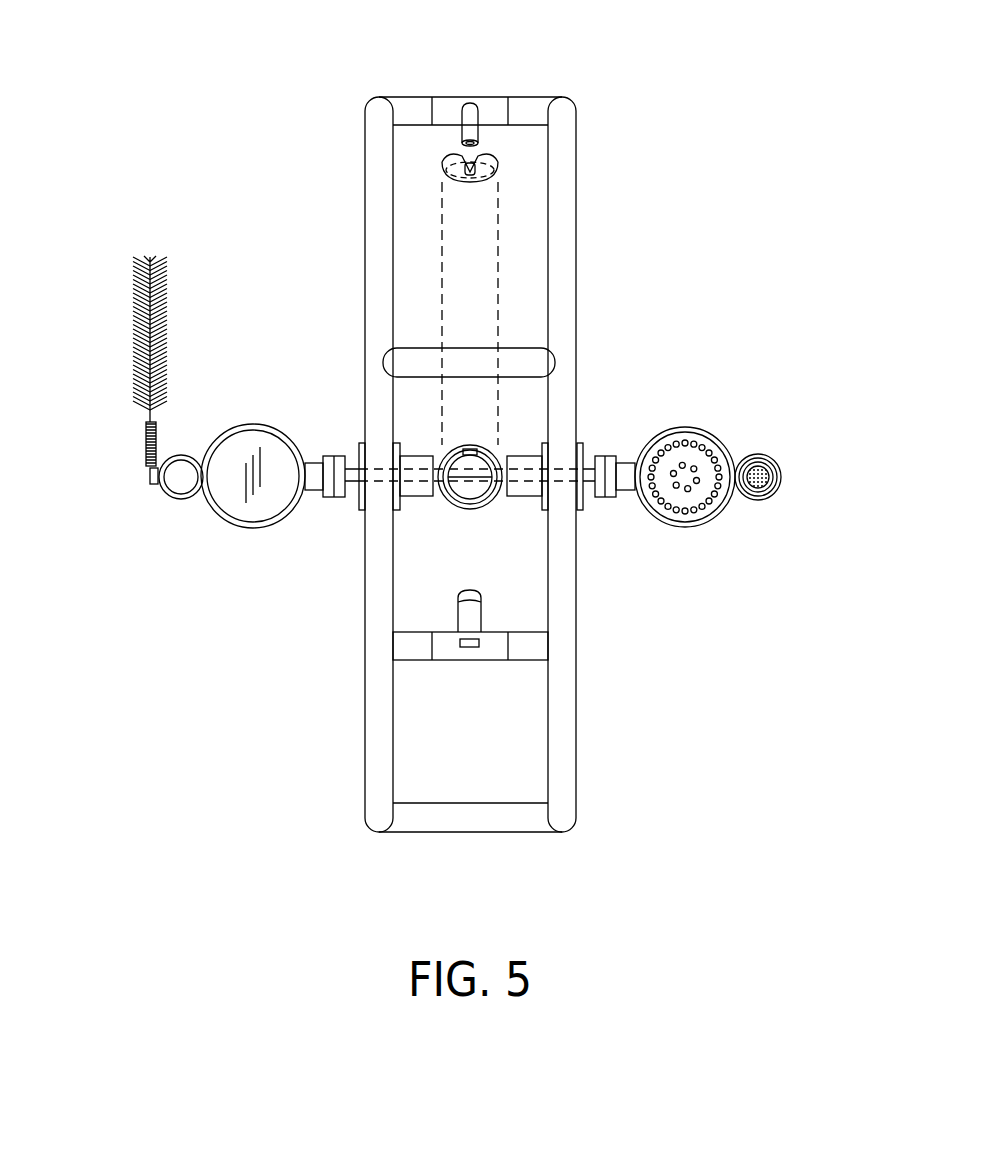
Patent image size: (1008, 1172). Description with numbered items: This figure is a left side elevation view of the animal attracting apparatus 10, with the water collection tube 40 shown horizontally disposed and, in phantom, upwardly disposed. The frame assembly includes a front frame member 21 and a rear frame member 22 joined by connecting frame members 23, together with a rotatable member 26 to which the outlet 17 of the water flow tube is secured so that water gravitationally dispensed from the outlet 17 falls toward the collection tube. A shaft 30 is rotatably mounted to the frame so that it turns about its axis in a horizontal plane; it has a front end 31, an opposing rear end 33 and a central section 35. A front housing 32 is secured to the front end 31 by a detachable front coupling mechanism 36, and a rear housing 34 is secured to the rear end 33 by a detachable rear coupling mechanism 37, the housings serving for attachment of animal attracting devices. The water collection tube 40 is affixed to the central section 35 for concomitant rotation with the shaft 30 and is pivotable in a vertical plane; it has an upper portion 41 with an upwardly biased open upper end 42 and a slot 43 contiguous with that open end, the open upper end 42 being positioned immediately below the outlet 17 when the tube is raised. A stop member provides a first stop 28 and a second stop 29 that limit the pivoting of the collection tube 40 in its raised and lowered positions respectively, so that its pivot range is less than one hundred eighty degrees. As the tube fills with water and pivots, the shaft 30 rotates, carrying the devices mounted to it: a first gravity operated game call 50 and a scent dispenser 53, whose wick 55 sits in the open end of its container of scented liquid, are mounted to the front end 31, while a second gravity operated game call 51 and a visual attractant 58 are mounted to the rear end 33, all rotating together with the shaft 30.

The animal attracting apparatus 10 is at (262, 78).
The outlet 17 is at (478, 138).
The front frame member 21 is at (580, 780).
The rear frame member 22 is at (362, 780).
The connecting frame members 23 is at (522, 358).
The rotatable member 26 is at (447, 98).
The first stop 28 is at (463, 597).
The second stop 29 is at (470, 648).
The shaft 30 is at (415, 472).
The front end 31 is at (588, 481).
The front housing 32 is at (786, 488).
The rear end 33 is at (353, 481).
The rear housing 34 is at (157, 488).
The central section 35 is at (505, 473).
The detachable front coupling mechanism 36 is at (605, 453).
The detachable rear coupling mechanism 37 is at (334, 452).
The water collection tube 40 is at (470, 507).
The upper portion 41 is at (488, 228).
The open upper end 42 is at (496, 158).
The slot 43 is at (470, 178).
The first gravity operated game call 50 is at (684, 528).
The second gravity operated game call 51 is at (253, 528).
The scent dispenser 53 is at (776, 470).
The wick 55 is at (760, 488).
The visual attractant 58 is at (130, 334).